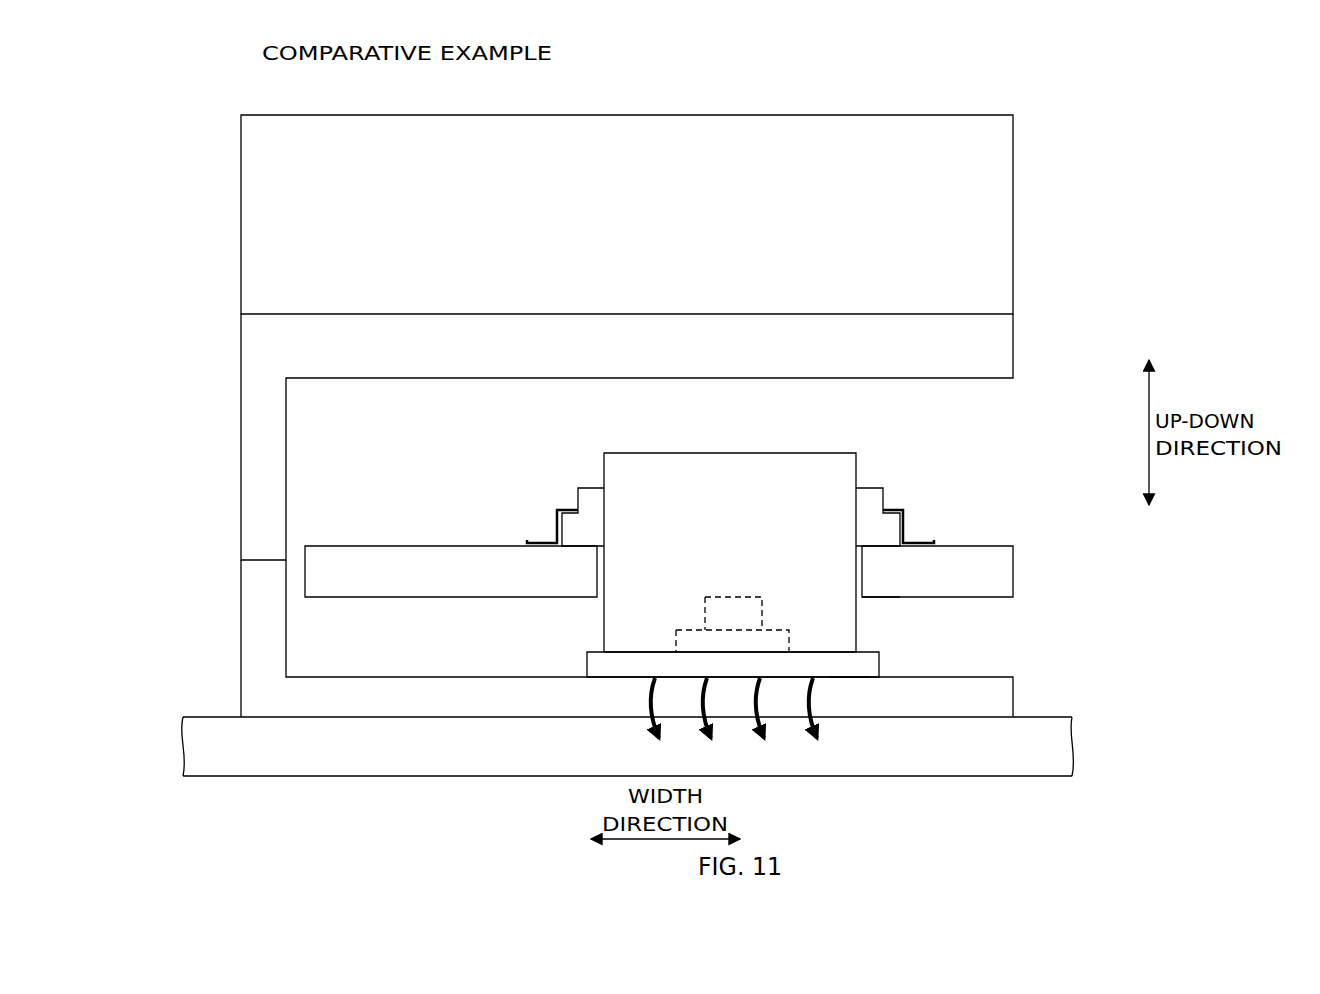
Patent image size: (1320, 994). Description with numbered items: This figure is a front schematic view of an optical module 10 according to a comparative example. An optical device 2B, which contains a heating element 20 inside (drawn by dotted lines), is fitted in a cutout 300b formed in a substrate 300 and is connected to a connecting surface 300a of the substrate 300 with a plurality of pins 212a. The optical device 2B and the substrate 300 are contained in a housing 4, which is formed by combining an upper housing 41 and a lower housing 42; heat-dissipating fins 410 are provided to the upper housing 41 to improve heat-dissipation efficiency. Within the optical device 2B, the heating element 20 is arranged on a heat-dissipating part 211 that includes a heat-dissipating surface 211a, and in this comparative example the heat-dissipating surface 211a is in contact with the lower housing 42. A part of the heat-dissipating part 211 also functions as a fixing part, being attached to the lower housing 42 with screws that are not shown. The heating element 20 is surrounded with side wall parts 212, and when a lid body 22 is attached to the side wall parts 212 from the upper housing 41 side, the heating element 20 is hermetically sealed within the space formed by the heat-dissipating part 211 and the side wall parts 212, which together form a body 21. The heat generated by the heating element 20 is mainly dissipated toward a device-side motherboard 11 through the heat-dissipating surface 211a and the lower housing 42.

The optical module 10 is at (1048, 96).
The heat-dissipating fins 410 is at (605, 126).
The housing 4 is at (146, 505).
The upper housing 41 is at (226, 473).
The lower housing 42 is at (226, 631).
The device-side motherboard 11 is at (959, 763).
The connecting surface 300a is at (377, 545).
The substrate 300 is at (1005, 571).
The cutout 300b is at (866, 604).
The optical device 2B is at (912, 455).
The body 21 is at (514, 618).
The side wall parts 212 is at (612, 629).
The lid body 22 is at (725, 451).
The heat-dissipating part 211 is at (597, 666).
The heat-dissipating surface 211a is at (848, 678).
The heating element 20 is at (754, 581).
The pins 212a is at (557, 521).